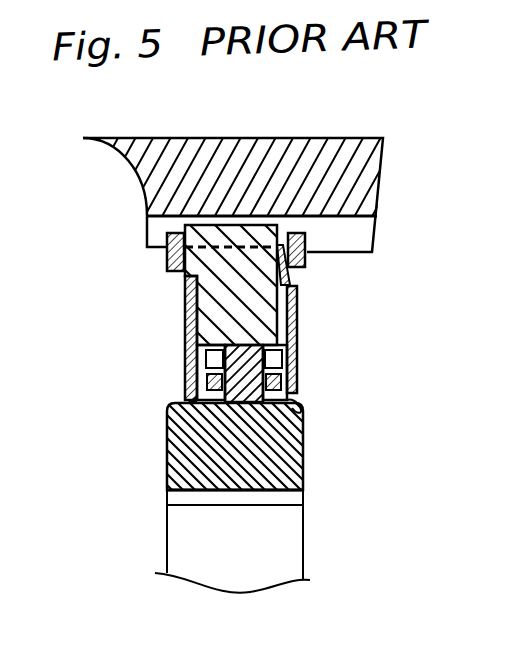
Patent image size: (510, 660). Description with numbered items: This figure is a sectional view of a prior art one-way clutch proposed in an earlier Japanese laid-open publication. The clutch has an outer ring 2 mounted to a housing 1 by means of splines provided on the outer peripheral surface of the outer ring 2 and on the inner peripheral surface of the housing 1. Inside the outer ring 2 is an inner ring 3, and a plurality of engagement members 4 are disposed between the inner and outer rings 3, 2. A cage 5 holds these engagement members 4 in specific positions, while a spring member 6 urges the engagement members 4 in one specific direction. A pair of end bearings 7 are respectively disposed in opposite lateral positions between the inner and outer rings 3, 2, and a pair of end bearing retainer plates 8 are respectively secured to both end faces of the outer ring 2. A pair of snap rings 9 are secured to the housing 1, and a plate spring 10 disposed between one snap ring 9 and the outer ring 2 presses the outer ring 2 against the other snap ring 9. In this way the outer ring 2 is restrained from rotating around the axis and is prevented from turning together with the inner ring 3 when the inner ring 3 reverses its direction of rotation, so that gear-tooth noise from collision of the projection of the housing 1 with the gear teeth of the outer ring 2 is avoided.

The housing 1 is at (358, 182).
The outer ring 2 is at (222, 292).
The inner ring 3 is at (288, 458).
The engagement members 4 is at (250, 402).
The cage 5 is at (205, 365).
The spring member 6 is at (297, 385).
The end bearings 7 is at (180, 400).
The end bearing retainer plates 8 is at (187, 338).
The snap rings 9 is at (165, 265).
The plate spring 10 is at (284, 282).